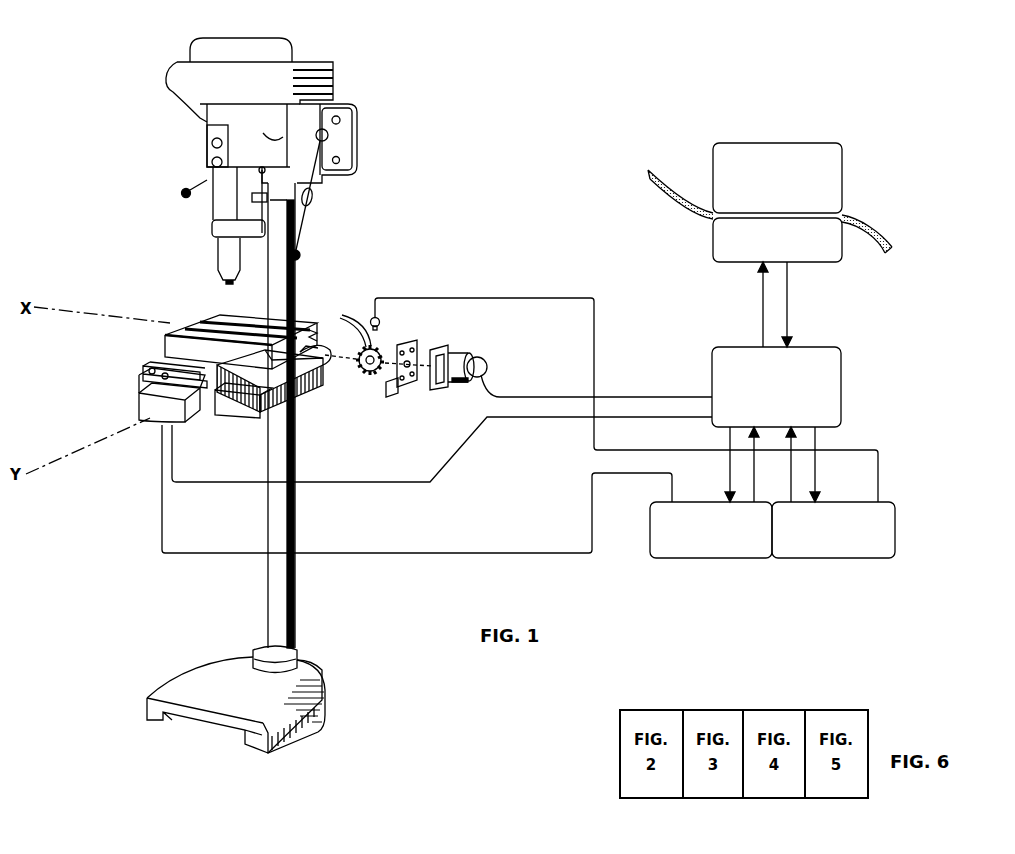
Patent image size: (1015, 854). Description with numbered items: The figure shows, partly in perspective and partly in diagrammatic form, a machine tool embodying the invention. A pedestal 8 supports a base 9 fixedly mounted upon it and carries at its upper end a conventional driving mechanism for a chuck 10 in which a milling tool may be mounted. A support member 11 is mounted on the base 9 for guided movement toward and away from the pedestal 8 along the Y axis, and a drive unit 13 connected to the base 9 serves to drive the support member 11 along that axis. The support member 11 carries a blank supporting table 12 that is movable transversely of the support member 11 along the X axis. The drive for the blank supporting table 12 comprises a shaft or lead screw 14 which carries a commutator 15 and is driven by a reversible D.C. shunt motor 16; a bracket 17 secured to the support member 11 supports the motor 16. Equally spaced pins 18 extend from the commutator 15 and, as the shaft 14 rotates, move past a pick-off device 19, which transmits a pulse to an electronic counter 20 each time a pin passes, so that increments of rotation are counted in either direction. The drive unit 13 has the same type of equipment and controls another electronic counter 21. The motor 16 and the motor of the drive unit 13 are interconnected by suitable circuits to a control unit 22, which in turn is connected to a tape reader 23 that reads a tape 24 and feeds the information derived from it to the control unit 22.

The pedestal 8 is at (295, 606).
The base 9 is at (243, 412).
The chuck 10 is at (218, 268).
The support member 11 is at (170, 363).
The blank supporting table 12 is at (212, 323).
The drive unit 13 is at (142, 404).
The shaft or lead screw 14 is at (308, 388).
The commutator 15 is at (372, 375).
The reversible D.C. shunt motor 16 is at (485, 358).
The bracket 17 is at (400, 390).
The pins 18 is at (348, 327).
The pick-off device 19 is at (382, 322).
The electronic counter 20 is at (890, 540).
The electronic counter 21 is at (655, 540).
The control unit 22 is at (835, 406).
The tape reader 23 is at (722, 253).
The tape 24 is at (876, 241).